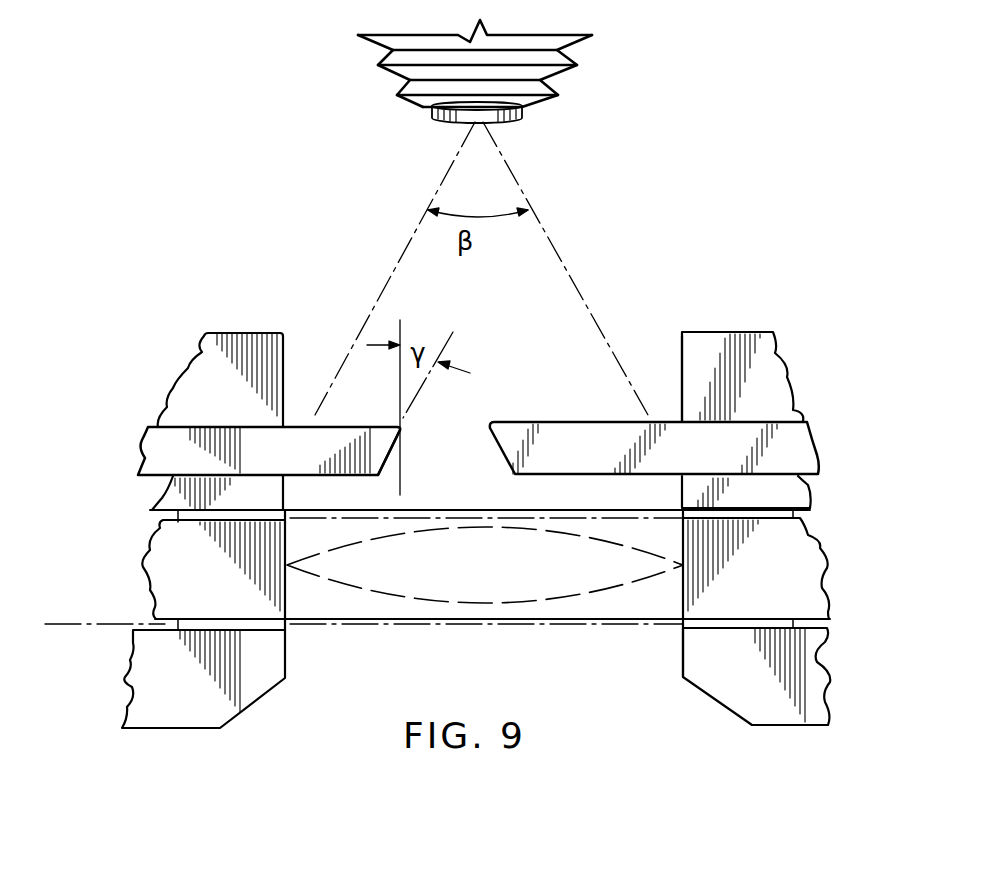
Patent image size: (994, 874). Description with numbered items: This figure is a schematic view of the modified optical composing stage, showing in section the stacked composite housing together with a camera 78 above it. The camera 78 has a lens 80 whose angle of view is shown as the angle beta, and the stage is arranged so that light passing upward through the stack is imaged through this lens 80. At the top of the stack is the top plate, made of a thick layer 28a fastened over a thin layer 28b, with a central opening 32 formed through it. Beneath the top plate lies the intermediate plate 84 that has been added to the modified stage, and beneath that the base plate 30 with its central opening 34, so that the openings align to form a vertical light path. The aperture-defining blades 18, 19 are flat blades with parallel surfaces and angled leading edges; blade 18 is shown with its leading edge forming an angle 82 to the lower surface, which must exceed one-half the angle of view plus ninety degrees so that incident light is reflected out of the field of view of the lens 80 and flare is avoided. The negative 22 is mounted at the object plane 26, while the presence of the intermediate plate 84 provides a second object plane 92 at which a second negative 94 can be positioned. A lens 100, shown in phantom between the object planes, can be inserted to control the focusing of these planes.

The camera 78 is at (575, 66).
The lens 80 is at (524, 115).
The thick layer 28a is at (192, 368).
The thin layer 28b is at (156, 500).
The central opening 32 is at (680, 347).
The aperture-defining blade 18 is at (196, 427).
The aperture-defining blade 19 is at (565, 416).
The angle 82 is at (340, 472).
The intermediate plate 84 is at (150, 558).
The negative 22 is at (742, 515).
The object plane 26 is at (500, 523).
The lens 100 is at (608, 526).
The second negative 94 is at (303, 628).
The second object plane 92 is at (88, 628).
The base plate 30 is at (130, 660).
The central opening 34 is at (683, 642).